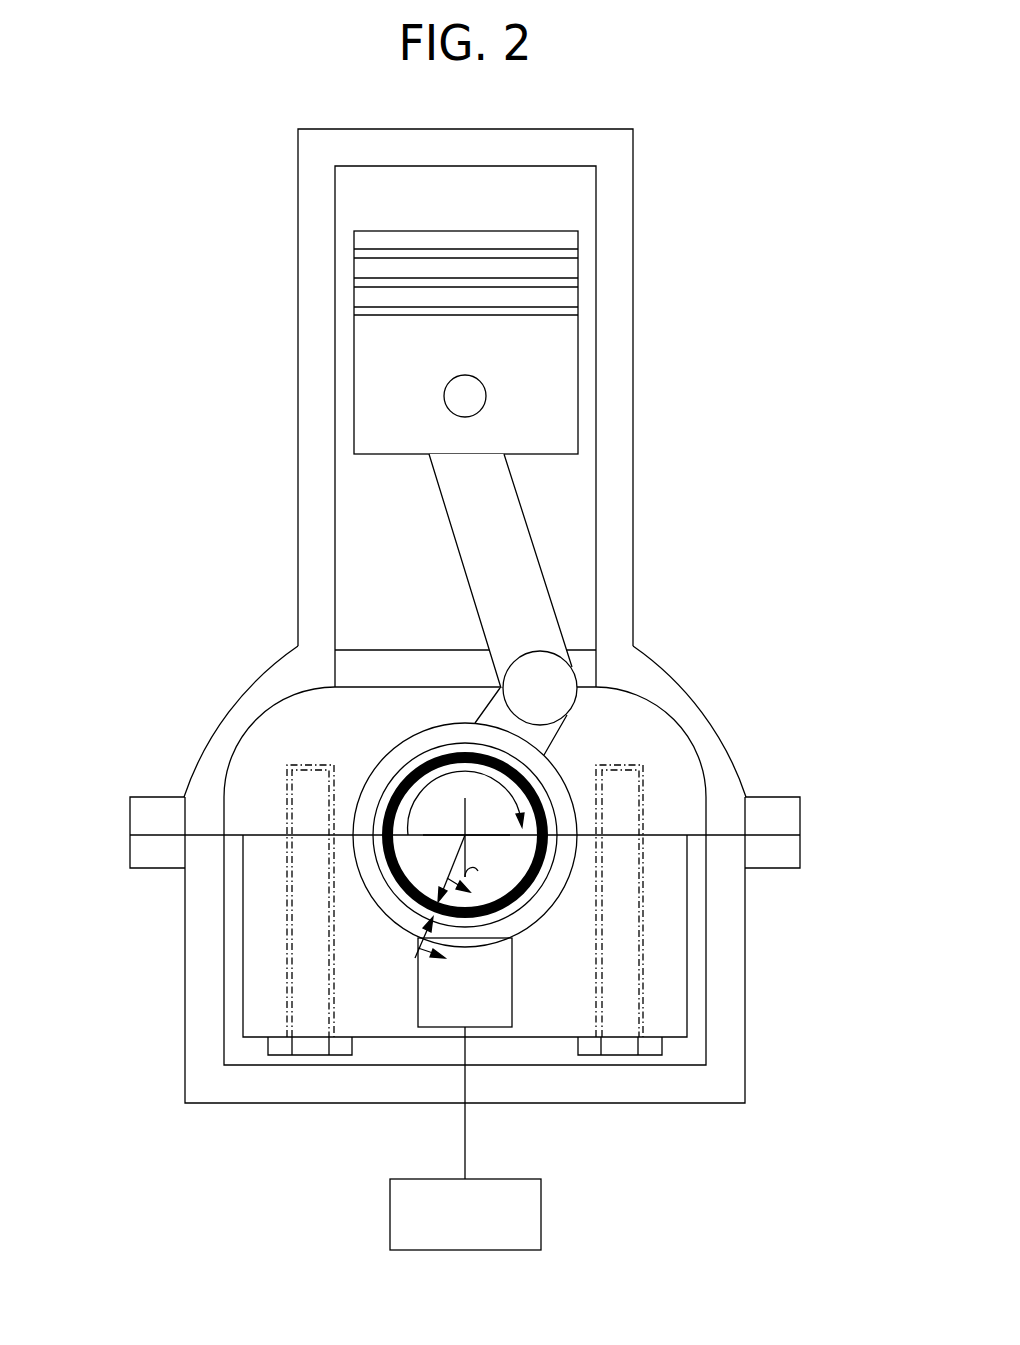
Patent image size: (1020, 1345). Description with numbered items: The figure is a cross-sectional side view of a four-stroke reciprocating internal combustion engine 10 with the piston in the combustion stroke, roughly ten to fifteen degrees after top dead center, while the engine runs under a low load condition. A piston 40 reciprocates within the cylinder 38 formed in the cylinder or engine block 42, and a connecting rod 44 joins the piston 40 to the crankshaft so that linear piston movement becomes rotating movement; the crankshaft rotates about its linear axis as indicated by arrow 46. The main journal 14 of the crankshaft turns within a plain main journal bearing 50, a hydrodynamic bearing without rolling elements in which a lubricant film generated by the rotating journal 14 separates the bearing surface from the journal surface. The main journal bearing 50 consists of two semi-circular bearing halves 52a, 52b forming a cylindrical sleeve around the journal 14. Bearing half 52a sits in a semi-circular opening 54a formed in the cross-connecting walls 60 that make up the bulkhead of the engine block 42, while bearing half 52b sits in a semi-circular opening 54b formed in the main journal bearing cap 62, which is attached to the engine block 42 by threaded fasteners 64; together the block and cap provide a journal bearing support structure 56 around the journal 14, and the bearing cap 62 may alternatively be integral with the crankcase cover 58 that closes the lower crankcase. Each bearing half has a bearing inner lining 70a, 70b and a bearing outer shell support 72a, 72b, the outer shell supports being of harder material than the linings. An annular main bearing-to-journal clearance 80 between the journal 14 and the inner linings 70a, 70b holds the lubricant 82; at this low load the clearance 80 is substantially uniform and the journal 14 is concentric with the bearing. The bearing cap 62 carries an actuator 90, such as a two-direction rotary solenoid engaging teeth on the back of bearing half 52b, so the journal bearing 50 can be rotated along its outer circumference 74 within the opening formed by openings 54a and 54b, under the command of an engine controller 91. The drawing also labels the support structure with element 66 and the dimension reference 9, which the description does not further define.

The internal combustion engine 10 is at (156, 190).
The main journal 14 is at (495, 782).
The cylinder 38 is at (360, 525).
The piston 40 is at (481, 357).
The engine block 42 is at (220, 747).
The connecting rod 44 is at (491, 496).
The arrow 46 is at (466, 803).
The main journal bearing 50 is at (350, 807).
The bearing half 52a is at (360, 753).
The bearing half 52b is at (388, 932).
The semi-circular opening 54a is at (397, 760).
The semi-circular opening 54b is at (383, 885).
The journal bearing support structure 56 is at (632, 806).
The crankcase cover 58 is at (203, 1063).
The cross-connecting walls 60 is at (239, 786).
The main journal bearing cap 62 is at (654, 875).
The threaded fasteners 64 is at (310, 933).
The flange 66 is at (760, 835).
The bearing inner lining 70a is at (418, 745).
The bearing inner lining 70b is at (542, 902).
The bearing outer shell support 72a is at (461, 722).
The bearing outer shell support 72b is at (524, 936).
The outer circumference 74 is at (360, 863).
The main bearing-to-journal clearance 80 is at (527, 783).
The lubricant 82 is at (619, 889).
The actuator 90 is at (465, 1058).
The engine controller 91 is at (465, 1214).
The journal surface thickness 9 is at (438, 910).